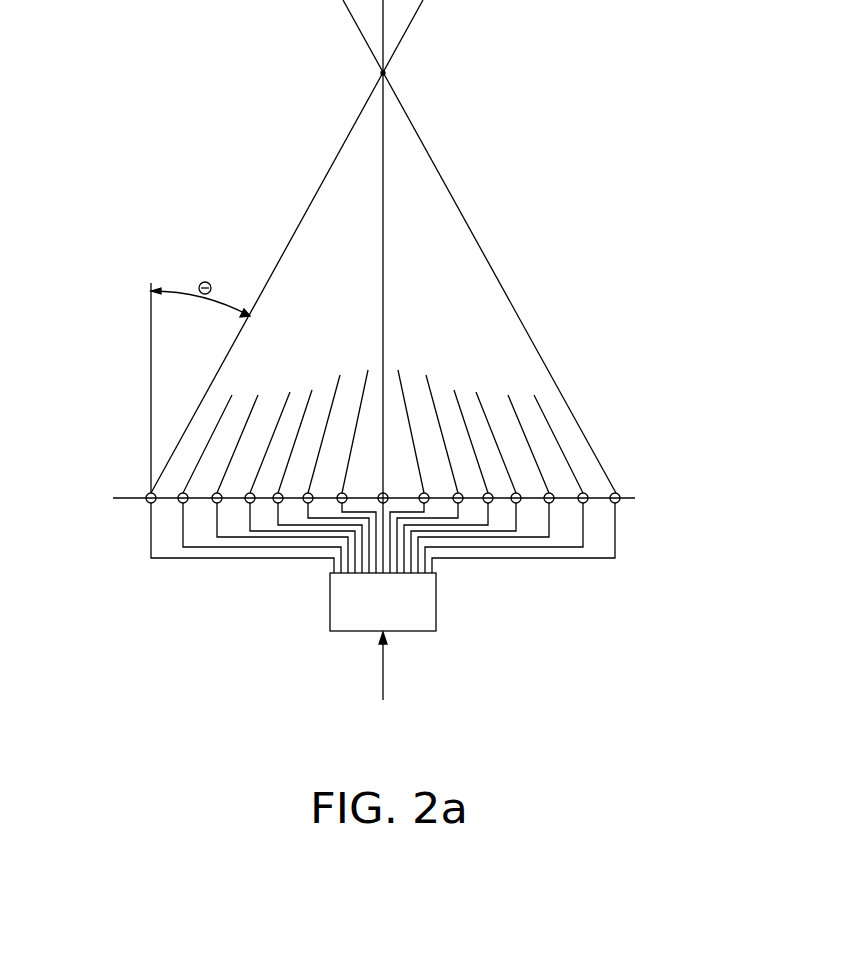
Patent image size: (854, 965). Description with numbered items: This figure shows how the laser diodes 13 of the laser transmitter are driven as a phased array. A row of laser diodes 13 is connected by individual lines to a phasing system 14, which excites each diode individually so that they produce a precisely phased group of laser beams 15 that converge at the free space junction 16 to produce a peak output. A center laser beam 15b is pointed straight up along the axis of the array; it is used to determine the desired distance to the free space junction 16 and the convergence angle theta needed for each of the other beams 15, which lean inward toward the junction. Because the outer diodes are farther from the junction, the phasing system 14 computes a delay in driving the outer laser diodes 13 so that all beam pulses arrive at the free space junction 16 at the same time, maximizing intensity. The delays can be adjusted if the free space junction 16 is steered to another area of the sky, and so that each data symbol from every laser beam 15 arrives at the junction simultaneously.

The laser diodes 13 is at (183, 493).
The phasing system 14 is at (436, 603).
The laser beams 15 is at (312, 200).
The center laser beam 15b is at (385, 152).
The free space junction 16 is at (385, 74).